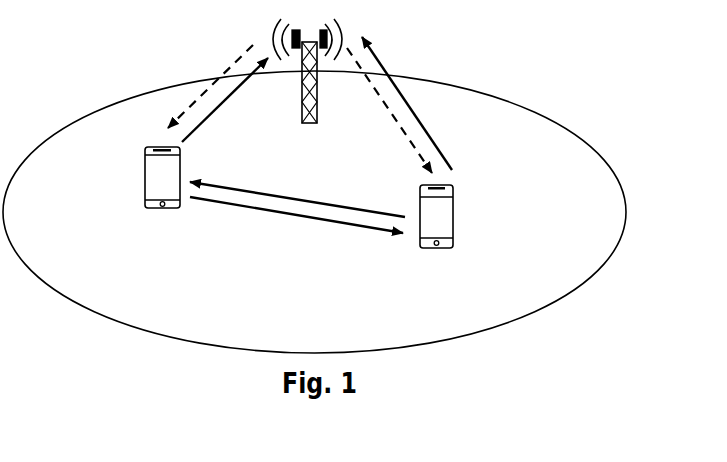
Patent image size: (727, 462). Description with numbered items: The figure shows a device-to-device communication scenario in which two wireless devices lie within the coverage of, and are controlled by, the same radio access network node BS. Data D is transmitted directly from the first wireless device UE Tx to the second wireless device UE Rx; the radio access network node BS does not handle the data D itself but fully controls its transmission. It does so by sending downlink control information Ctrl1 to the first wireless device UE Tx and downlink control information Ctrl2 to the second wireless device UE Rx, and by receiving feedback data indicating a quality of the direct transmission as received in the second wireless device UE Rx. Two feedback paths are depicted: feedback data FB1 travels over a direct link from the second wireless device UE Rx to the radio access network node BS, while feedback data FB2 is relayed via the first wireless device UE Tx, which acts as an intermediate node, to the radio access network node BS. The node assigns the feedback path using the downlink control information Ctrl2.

The radio access network node BS is at (307, 90).
The first wireless device UE Tx is at (163, 195).
The second wireless device UE Rx is at (436, 237).
The feedback data FB1 is at (407, 95).
The feedback data FB2 is at (293, 137).
The downlink control information Ctrl1 is at (173, 91).
The downlink control information Ctrl2 is at (389, 117).
The data D is at (296, 230).